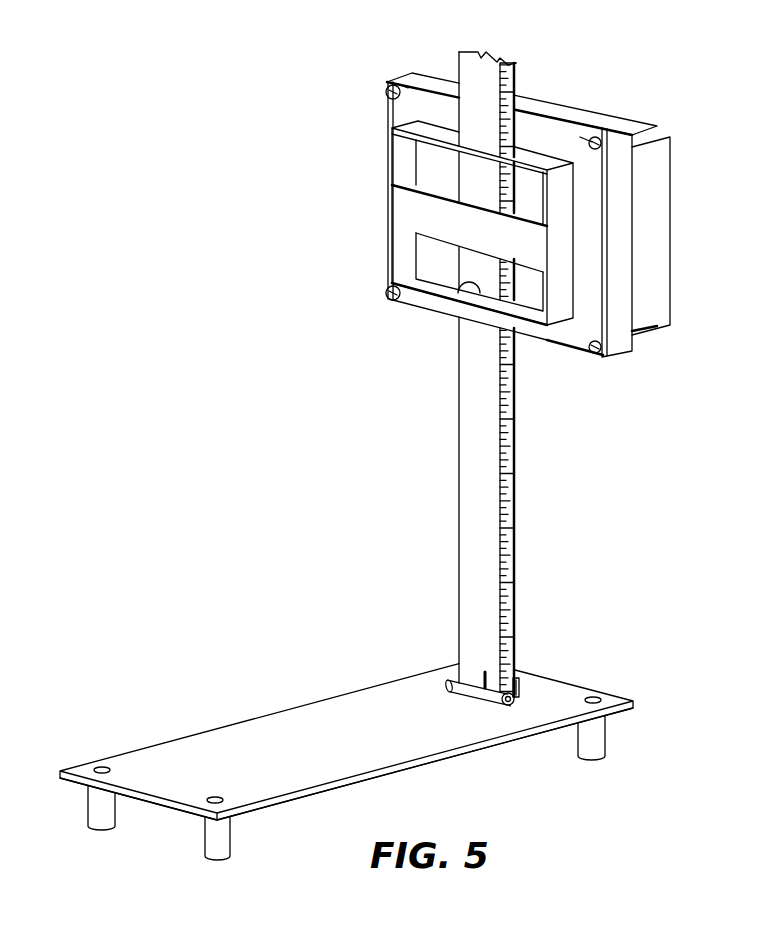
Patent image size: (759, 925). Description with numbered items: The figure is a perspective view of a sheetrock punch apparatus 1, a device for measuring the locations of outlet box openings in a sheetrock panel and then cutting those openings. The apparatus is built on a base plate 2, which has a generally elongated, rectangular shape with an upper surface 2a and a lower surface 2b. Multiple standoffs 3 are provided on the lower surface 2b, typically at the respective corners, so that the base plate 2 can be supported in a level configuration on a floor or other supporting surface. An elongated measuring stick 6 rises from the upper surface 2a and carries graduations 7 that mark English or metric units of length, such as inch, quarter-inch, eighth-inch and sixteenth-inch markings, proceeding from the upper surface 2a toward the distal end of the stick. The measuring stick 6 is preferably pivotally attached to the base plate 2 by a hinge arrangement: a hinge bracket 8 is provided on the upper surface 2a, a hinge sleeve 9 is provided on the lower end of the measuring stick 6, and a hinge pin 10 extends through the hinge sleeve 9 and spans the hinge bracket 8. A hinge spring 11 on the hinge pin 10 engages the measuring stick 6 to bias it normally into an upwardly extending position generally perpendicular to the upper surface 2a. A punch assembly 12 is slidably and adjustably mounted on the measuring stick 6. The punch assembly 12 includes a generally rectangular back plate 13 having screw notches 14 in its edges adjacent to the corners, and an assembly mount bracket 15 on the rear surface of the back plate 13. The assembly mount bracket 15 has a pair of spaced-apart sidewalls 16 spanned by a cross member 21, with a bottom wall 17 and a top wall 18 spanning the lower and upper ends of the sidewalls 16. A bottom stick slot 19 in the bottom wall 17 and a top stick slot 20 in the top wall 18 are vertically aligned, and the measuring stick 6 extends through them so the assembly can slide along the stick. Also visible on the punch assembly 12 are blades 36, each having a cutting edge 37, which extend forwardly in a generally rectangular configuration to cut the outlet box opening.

The sheetrock punch apparatus 1 is at (350, 76).
The base plate 2 is at (207, 743).
The upper surface 2a is at (300, 758).
The lower surface 2b is at (263, 808).
The standoffs 3 is at (211, 833).
The measuring stick 6 is at (471, 440).
The graduations 7 is at (513, 419).
The hinge bracket 8 is at (515, 685).
The hinge sleeve 9 is at (462, 680).
The hinge pin 10 is at (514, 702).
The hinge spring 11 is at (470, 701).
The punch assembly 12 is at (434, 70).
The back plate 13 is at (578, 339).
The screw notches 14 is at (405, 82).
The assembly mount bracket 15 is at (418, 297).
The sidewalls 16 is at (399, 153).
The bottom wall 17 is at (417, 280).
The top wall 18 is at (410, 128).
The bottom stick slot 19 is at (451, 297).
The top stick slot 20 is at (480, 148).
The cross member 21 is at (428, 212).
The blades 36 is at (626, 124).
The cutting edge 37 is at (558, 95).